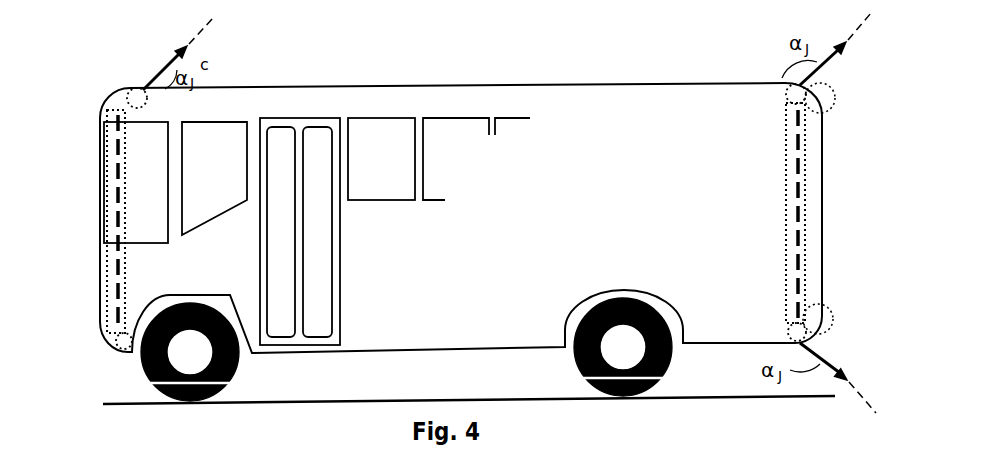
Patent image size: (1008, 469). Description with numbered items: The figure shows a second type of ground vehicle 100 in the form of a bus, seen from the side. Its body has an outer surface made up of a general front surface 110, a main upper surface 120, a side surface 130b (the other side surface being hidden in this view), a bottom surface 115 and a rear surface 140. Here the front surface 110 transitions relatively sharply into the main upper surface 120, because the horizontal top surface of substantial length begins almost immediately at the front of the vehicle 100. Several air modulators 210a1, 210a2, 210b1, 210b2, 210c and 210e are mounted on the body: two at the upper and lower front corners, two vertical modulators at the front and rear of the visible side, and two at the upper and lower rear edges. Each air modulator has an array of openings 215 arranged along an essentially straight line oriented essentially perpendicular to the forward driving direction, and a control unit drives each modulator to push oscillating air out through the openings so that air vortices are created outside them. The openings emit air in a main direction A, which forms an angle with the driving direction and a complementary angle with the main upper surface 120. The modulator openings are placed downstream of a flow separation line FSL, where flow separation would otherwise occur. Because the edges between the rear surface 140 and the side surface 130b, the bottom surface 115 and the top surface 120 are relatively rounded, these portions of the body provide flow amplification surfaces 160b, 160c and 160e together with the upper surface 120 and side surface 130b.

The ground vehicle 100 is at (361, 64).
The general front surface 110 is at (100, 137).
The bottom surface 115 is at (390, 352).
The main upper surface 120 is at (478, 86).
The side surface 130b is at (659, 212).
The rear surface 140 is at (822, 210).
The flow amplification surface 160b is at (812, 248).
The flow amplification surface 160c is at (823, 97).
The flow amplification surface 160e is at (820, 325).
The air modulator 210a1 is at (140, 90).
The air modulator 210a2 is at (118, 350).
The air modulator 210b1 is at (787, 157).
The air modulator 210b2 is at (125, 267).
The air modulator 210c is at (785, 88).
The air modulator 210e is at (792, 335).
The array of openings 215 is at (797, 184).
The flow separation line FSL is at (788, 82).
The main direction A is at (509, 213).